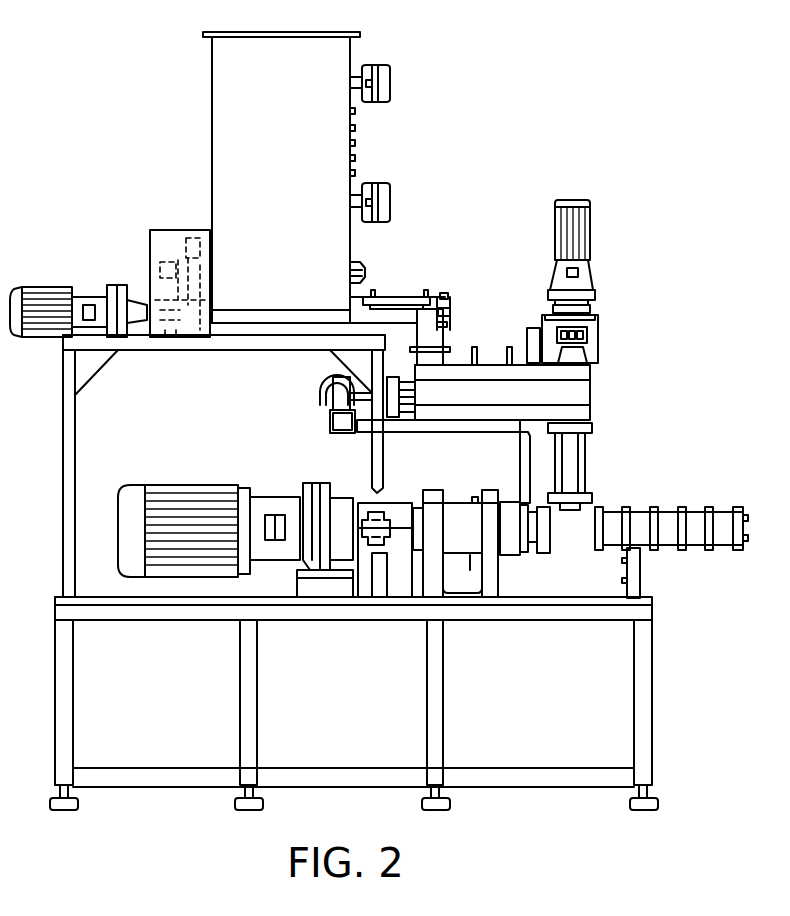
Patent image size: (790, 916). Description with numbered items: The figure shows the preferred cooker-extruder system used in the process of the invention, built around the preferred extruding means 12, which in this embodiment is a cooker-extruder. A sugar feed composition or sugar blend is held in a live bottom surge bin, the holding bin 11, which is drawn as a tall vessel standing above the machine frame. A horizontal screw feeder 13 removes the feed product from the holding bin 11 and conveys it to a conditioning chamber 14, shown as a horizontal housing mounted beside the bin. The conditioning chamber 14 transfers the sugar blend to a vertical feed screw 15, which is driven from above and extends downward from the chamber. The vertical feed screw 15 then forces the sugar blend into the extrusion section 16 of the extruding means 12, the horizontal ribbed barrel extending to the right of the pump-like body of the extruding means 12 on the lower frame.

The holding bin 11 is at (212, 163).
The extruding means 12 is at (458, 500).
The horizontal screw feeder 13 is at (395, 293).
The conditioning chamber 14 is at (485, 380).
The vertical feed screw 15 is at (588, 457).
The extrusion section 16 is at (670, 507).